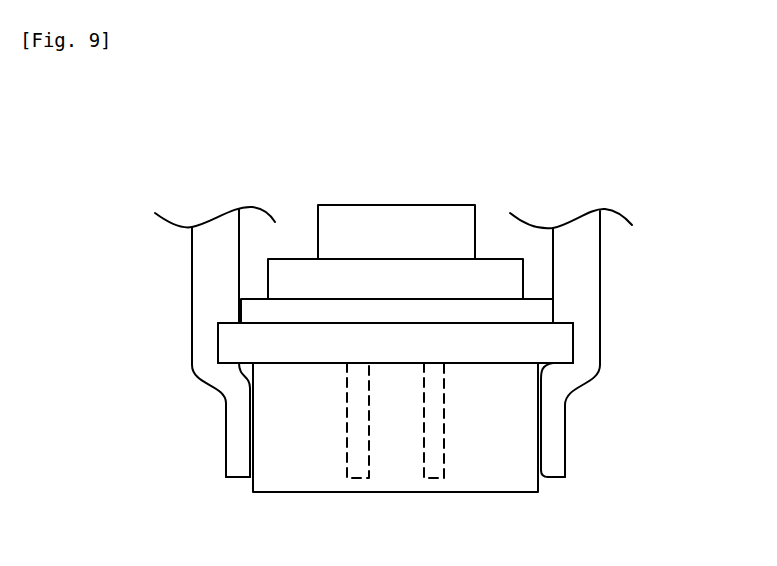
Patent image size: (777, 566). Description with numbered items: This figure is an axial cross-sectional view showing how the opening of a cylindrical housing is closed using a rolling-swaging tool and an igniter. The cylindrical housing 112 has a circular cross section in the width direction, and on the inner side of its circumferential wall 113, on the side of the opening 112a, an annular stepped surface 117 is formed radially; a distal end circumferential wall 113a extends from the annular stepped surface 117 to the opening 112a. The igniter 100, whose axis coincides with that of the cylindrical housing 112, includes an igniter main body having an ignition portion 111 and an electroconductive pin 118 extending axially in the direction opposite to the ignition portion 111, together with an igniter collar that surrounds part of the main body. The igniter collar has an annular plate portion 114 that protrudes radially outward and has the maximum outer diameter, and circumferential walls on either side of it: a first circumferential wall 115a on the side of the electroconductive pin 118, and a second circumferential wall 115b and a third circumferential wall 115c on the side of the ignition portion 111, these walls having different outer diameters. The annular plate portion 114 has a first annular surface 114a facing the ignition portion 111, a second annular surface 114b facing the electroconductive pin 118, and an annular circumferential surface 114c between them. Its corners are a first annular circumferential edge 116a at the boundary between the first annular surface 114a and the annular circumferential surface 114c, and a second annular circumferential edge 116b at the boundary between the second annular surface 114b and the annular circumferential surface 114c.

The igniter 100 is at (337, 186).
The ignition portion 111 is at (418, 205).
The cylindrical housing 112 is at (186, 262).
The opening 112a is at (250, 478).
The circumferential wall 113 is at (585, 277).
The distal end circumferential wall 113a is at (555, 443).
The annular plate portion 114 is at (289, 342).
The first annular surface 114a is at (255, 322).
The second annular surface 114b is at (448, 365).
The annular circumferential surface 114c is at (218, 337).
The first circumferential wall 115a is at (495, 478).
The second circumferential wall 115b is at (461, 315).
The third circumferential wall 115c is at (305, 272).
The first annular circumferential edge 116a is at (575, 323).
The second annular circumferential edge 116b is at (573, 363).
The annular stepped surface 117 is at (573, 345).
The electroconductive pin 118 is at (358, 462).